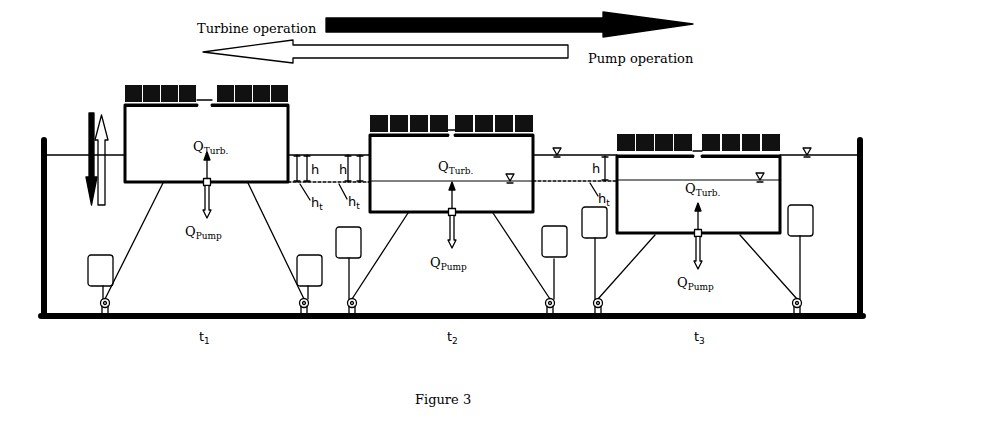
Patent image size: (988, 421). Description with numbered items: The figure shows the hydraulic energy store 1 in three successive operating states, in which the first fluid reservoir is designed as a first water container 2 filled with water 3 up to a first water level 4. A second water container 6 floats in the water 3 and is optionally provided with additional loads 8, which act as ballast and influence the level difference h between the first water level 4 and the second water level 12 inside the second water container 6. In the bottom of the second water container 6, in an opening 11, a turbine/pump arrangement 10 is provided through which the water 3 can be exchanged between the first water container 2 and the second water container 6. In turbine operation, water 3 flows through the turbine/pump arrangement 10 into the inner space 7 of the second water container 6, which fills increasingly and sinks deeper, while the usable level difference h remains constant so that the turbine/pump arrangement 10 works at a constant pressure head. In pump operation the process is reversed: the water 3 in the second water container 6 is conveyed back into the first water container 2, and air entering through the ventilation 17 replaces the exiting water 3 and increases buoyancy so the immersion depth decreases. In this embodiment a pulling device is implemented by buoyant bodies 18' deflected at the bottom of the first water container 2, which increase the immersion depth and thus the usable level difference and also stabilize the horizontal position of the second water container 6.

The hydraulic energy store 1 is at (76, 36).
The first water container 2 is at (157, 312).
The water 3 is at (452, 228).
The first water level 4 is at (567, 148).
The second water container 6 is at (125, 125).
The inner space 7 is at (272, 139).
The additional loads 8 is at (128, 84).
The turbine/pump arrangement 10 is at (203, 180).
The opening 11 is at (204, 202).
The second water level 12 is at (134, 180).
The ventilation 17 is at (204, 100).
The buoyant bodies 18' is at (461, 248).